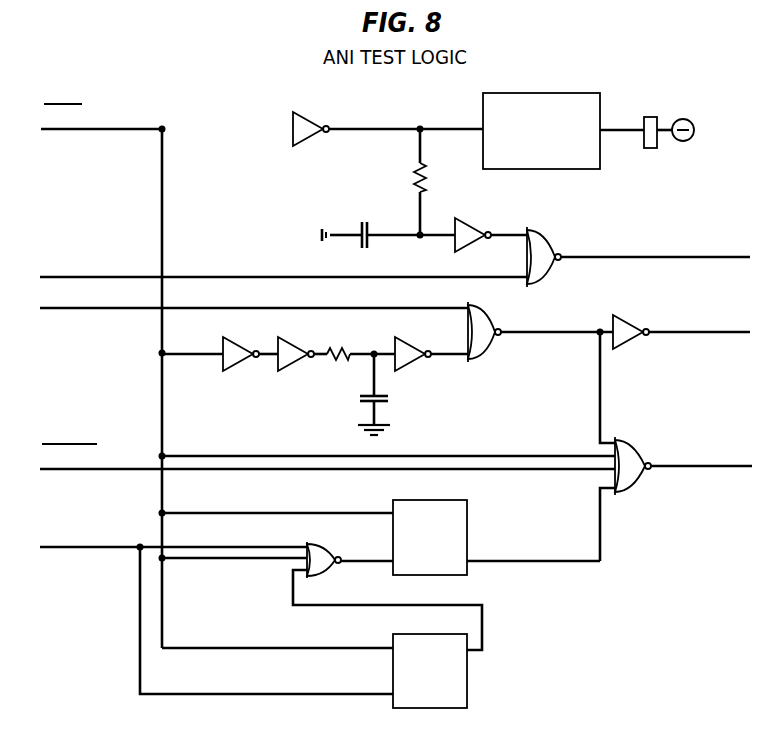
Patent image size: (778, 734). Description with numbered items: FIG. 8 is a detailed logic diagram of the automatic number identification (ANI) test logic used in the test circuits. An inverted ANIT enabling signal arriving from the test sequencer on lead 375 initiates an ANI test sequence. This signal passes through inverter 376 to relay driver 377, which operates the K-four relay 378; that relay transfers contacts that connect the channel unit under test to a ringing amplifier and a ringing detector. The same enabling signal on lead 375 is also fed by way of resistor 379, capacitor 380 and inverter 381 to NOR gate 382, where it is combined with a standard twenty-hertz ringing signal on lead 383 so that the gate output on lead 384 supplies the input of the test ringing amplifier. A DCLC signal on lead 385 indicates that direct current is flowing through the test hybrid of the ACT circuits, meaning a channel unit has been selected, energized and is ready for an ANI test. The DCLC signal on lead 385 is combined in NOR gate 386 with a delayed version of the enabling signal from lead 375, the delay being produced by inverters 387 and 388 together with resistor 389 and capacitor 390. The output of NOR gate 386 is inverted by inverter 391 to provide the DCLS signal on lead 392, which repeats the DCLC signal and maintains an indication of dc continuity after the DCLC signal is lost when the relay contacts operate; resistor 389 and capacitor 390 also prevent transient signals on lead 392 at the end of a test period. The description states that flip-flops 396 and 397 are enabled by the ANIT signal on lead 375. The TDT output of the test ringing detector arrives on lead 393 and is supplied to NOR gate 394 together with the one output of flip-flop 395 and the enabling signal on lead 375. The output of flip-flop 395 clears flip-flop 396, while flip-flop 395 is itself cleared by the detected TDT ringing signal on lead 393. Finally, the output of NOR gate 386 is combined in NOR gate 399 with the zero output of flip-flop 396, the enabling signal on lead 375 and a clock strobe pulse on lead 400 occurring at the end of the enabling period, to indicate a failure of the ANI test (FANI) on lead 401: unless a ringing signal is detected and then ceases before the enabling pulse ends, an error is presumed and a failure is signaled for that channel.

The lead 375 is at (103, 131).
The inverter 376 is at (311, 119).
The relay driver 377 is at (546, 169).
The K4 relay 378 is at (650, 148).
The resistor 379 is at (402, 177).
The capacitor 380 is at (350, 223).
The inverter 381 is at (473, 225).
The NOR gate 382 is at (548, 256).
The lead 383 is at (238, 275).
The lead 384 is at (600, 259).
The lead 385 is at (88, 310).
The NOR gate 386 is at (491, 330).
The inverter 387 is at (238, 343).
The inverter 388 is at (296, 367).
The resistor 389 is at (341, 341).
The capacitor 390 is at (389, 412).
The inverter 391 is at (631, 345).
The lead 392 is at (688, 334).
The lead 393 is at (85, 549).
The NOR gate 394 is at (324, 551).
The flip-flop 395 is at (462, 674).
The flip-flop 396 is at (467, 522).
The flip-flop 397 is at (413, 344).
The NOR gate 399 is at (633, 473).
The lead 400 is at (110, 471).
The lead 401 is at (703, 468).